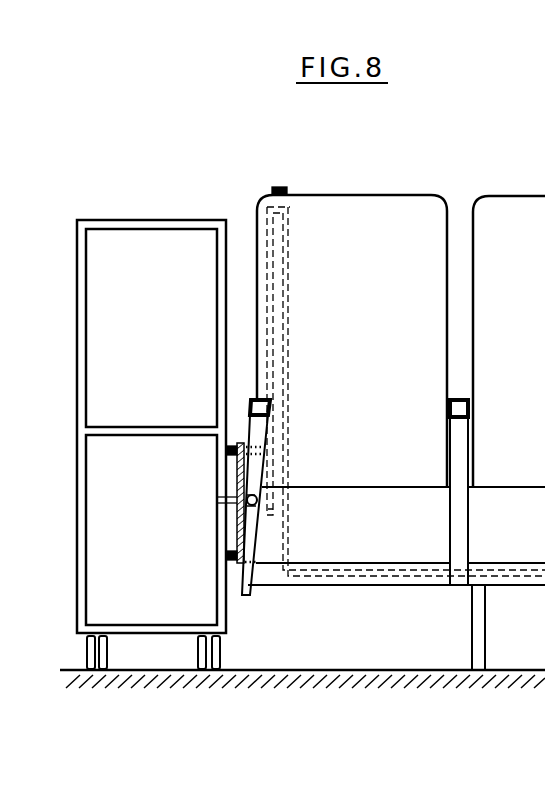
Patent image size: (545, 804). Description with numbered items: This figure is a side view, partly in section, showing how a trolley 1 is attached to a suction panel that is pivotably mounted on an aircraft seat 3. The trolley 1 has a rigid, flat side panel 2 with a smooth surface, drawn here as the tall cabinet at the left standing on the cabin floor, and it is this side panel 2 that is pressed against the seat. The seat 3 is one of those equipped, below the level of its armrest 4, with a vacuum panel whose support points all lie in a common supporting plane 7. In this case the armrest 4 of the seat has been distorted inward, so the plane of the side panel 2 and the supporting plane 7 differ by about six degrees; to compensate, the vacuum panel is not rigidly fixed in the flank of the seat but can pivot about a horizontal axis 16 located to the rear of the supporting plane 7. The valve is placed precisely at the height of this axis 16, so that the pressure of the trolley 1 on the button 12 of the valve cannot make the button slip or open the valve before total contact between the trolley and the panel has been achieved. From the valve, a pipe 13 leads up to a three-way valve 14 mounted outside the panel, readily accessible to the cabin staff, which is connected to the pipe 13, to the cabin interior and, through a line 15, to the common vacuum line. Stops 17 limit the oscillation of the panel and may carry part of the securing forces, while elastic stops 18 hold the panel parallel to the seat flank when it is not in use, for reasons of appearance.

The trolley 1 is at (165, 228).
The side panel 2 is at (222, 288).
The seat 3 is at (367, 215).
The armrest 4 is at (254, 398).
The supporting plane 7 is at (248, 427).
The button 12 is at (236, 498).
The pipe 13 is at (283, 277).
The three-way valve 14 is at (293, 193).
The line 15 is at (283, 322).
The horizontal axis 16 is at (256, 500).
The stops 17 is at (233, 446).
The elastic stops 18 is at (251, 443).